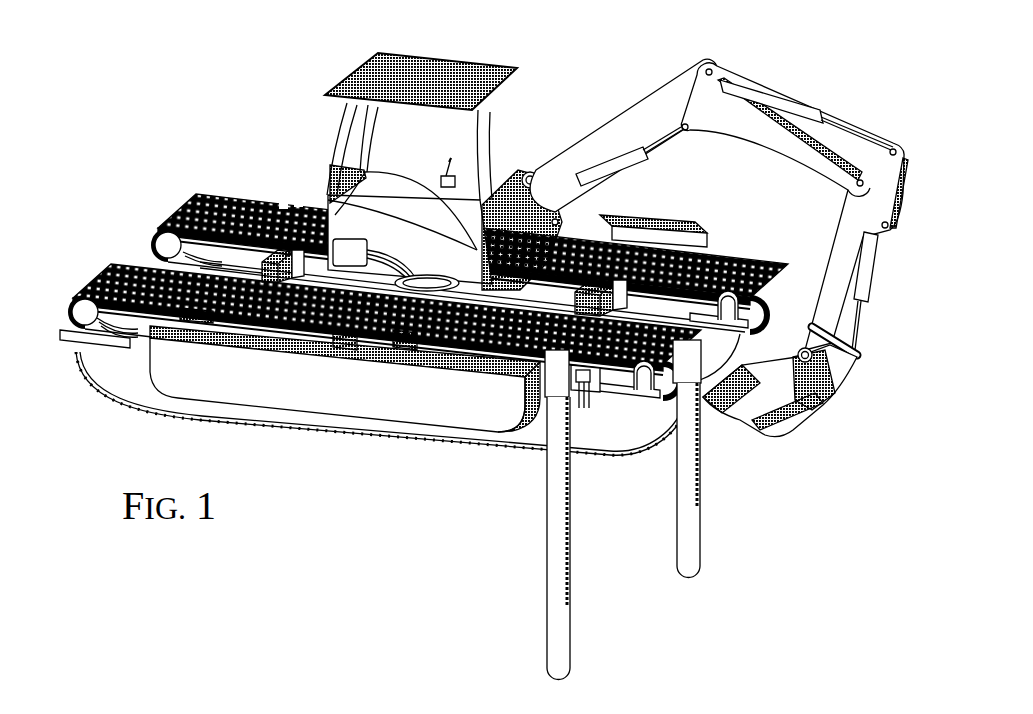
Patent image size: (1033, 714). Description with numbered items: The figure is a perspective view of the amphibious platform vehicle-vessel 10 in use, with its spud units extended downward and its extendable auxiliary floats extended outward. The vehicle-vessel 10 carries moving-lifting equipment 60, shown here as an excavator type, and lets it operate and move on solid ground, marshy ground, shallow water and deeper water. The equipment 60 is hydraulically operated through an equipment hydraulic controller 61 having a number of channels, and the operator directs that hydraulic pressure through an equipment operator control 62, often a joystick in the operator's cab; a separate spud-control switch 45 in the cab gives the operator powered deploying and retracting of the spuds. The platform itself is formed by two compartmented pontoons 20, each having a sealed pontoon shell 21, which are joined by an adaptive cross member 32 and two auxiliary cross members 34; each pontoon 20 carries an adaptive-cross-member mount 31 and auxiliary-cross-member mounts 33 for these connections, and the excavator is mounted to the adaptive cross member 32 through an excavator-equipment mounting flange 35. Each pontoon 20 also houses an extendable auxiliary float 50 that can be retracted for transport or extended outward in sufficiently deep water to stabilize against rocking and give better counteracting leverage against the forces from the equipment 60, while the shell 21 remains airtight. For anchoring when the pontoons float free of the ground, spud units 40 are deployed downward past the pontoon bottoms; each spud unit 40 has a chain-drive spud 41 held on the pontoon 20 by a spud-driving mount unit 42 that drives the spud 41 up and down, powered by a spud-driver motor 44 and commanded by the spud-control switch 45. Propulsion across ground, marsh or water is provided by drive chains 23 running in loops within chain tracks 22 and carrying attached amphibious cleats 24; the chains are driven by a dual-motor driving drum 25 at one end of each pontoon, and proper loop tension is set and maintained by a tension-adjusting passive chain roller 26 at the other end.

The amphibious platform vehicle-vessel 10 is at (129, 40).
The compartmented pontoon 20 is at (138, 167).
The sealed pontoon shell 21 is at (118, 393).
The chain track 22 is at (265, 200).
The drive chain 23 is at (284, 203).
The amphibious cleat 24 is at (298, 200).
The dual-motor driving drum 25 is at (212, 196).
The tension-adjusting passive chain roller 26 is at (718, 312).
The adaptive-cross-member mount 31 is at (498, 281).
The adaptive cross member 32 is at (482, 260).
The auxiliary-cross-member mount 33 is at (298, 262).
The auxiliary cross member 34 is at (258, 262).
The excavator-equipment mounting flange 35 is at (449, 257).
The spud unit 40 is at (670, 486).
The chain-drive spud 41 is at (552, 484).
The spud-driving mount unit 42 is at (556, 394).
The spud-driver motor 44 is at (588, 396).
The spud-control switch 45 is at (447, 164).
The extendable auxiliary float 50 is at (660, 214).
The moving-lifting equipment 60 is at (611, 71).
The equipment hydraulic controller 61 is at (338, 240).
The equipment operator control 62 is at (440, 182).